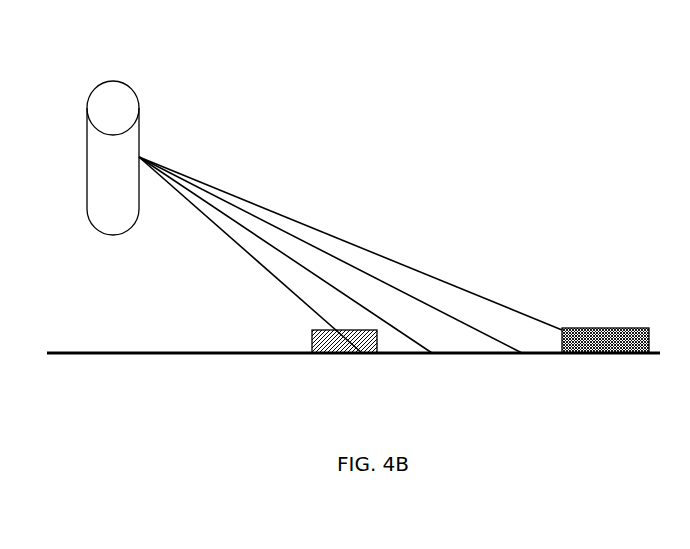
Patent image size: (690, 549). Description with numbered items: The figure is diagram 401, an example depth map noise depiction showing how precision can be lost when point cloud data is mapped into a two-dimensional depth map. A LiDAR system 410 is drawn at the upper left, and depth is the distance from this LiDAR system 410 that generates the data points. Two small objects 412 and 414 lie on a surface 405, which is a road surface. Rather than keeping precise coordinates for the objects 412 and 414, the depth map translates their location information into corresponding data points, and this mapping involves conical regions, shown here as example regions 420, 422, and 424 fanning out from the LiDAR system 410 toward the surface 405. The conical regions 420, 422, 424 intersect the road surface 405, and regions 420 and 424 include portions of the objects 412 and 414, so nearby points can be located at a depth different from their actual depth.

The diagram 401 is at (340, 116).
The surface 405 is at (143, 350).
The LiDAR system 410 is at (133, 138).
The small object 412 is at (364, 354).
The small object 414 is at (583, 346).
The conical region 420 is at (290, 274).
The conical region 422 is at (379, 304).
The conical region 424 is at (517, 323).